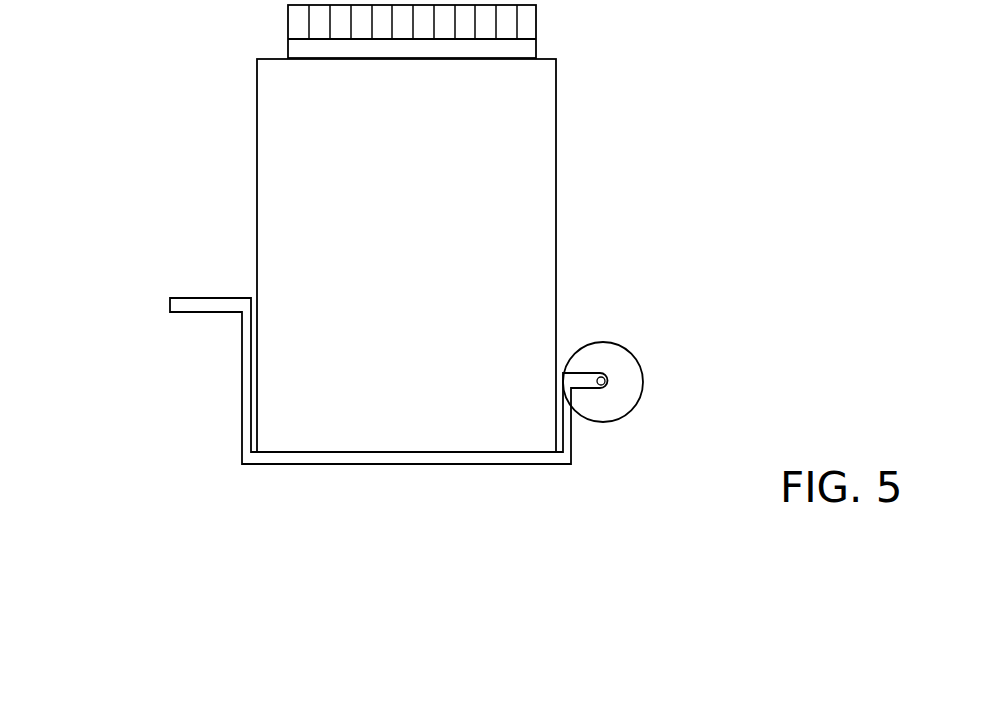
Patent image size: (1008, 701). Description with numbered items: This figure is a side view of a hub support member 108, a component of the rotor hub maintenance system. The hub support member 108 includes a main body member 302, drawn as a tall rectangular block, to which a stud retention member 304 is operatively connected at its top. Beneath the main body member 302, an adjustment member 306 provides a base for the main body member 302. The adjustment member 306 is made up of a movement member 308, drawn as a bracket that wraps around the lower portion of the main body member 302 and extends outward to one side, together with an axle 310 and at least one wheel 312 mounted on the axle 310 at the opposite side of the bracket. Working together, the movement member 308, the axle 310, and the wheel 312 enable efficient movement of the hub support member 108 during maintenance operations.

The hub support member 108 is at (108, 31).
The main body member 302 is at (557, 168).
The stud retention member 304 is at (537, 25).
The adjustment member 306 is at (543, 498).
The movement member 308 is at (242, 433).
The axle 310 is at (603, 378).
The wheel 312 is at (643, 378).